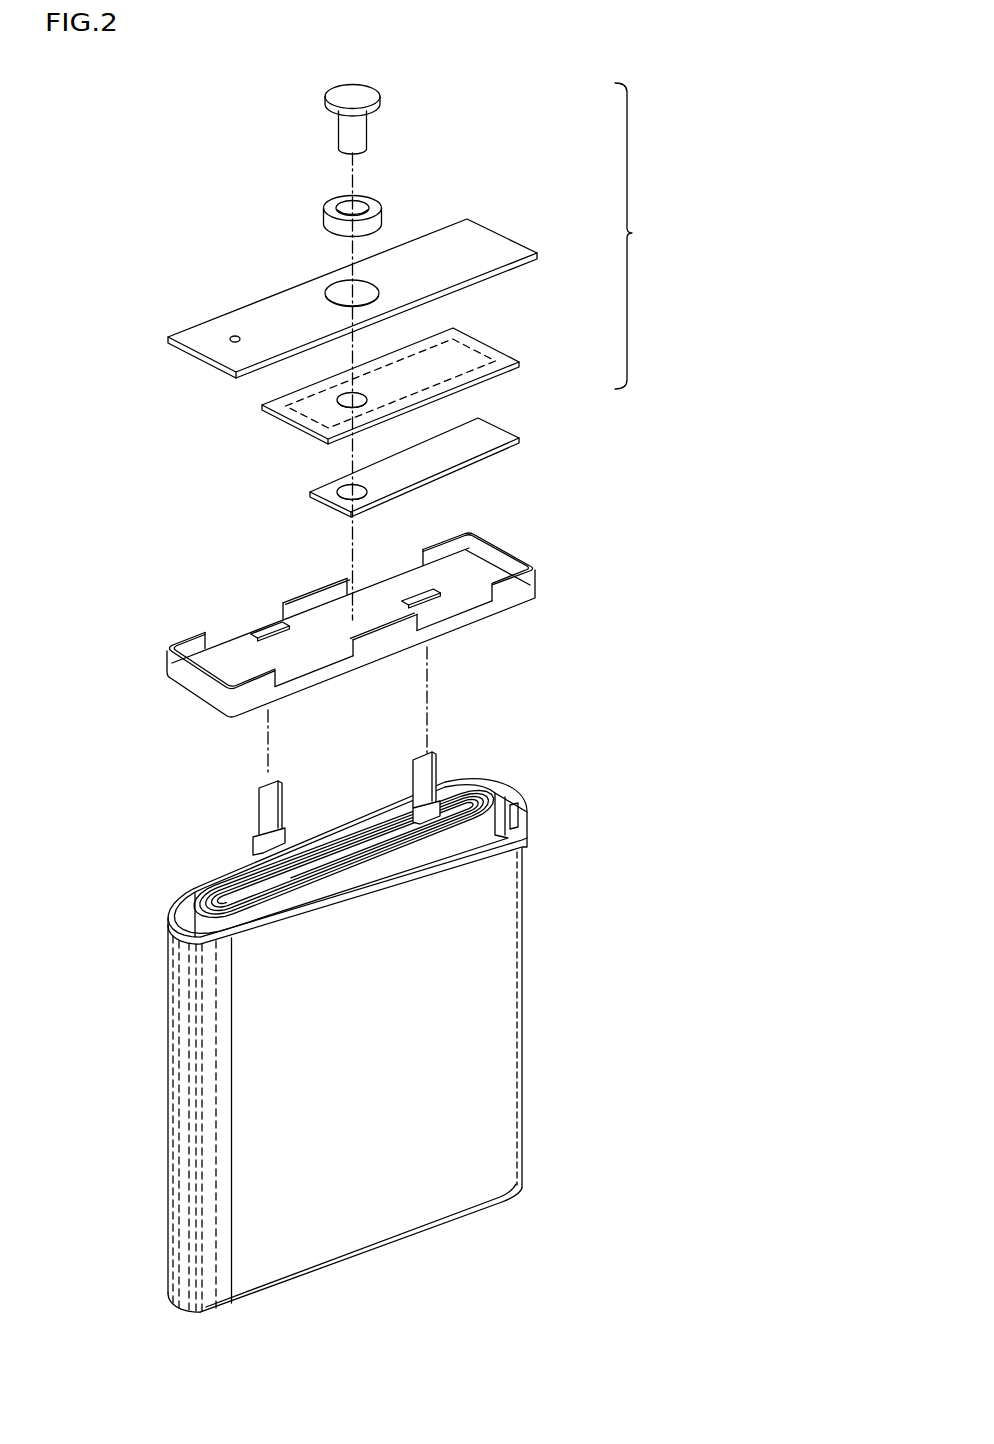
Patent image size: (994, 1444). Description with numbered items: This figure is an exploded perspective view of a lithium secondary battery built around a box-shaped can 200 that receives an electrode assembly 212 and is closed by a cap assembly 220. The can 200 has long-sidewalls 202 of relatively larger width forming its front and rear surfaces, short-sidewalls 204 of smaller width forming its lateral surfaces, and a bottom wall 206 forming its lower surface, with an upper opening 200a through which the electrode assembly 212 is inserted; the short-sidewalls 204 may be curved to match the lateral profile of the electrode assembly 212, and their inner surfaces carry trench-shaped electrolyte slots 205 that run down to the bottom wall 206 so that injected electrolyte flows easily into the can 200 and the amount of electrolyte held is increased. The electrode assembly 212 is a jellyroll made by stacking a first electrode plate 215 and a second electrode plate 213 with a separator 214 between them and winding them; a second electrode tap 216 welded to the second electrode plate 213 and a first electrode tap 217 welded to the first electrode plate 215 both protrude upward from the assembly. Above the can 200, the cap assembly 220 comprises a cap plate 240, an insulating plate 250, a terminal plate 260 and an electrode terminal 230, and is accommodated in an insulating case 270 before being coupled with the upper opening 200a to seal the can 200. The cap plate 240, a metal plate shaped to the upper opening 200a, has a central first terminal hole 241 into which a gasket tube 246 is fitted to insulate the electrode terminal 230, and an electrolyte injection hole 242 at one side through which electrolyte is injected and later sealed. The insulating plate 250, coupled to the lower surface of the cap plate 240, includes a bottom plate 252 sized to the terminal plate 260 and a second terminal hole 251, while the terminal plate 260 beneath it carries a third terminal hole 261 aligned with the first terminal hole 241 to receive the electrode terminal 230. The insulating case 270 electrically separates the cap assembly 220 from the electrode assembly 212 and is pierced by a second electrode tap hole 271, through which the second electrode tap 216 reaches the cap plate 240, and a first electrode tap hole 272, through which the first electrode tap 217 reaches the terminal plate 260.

The can 200 is at (385, 1019).
The upper opening 200a is at (518, 828).
The long-sidewalls 202 is at (377, 1077).
The short-sidewalls 204 is at (198, 1288).
The electrolyte slots 205 is at (166, 921).
The bottom wall 206 is at (378, 1256).
The electrode assembly 212 is at (390, 790).
The second electrode plate 213 is at (541, 767).
The separator 214 is at (480, 795).
The first electrode plate 215 is at (466, 796).
The second electrode tap 216 is at (270, 813).
The first electrode tap 217 is at (427, 775).
The cap assembly 220 is at (648, 236).
The electrode terminal 230 is at (363, 95).
The cap plate 240 is at (373, 291).
The first terminal hole 241 is at (340, 290).
The electrolyte injection hole 242 is at (232, 337).
The gasket tube 246 is at (332, 205).
The insulating plate 250 is at (382, 393).
The second terminal hole 251 is at (342, 403).
The bottom plate 252 is at (270, 412).
The terminal plate 260 is at (422, 470).
The third terminal hole 261 is at (343, 498).
The insulating case 270 is at (295, 613).
The second electrode tap hole 271 is at (263, 628).
The first electrode tap hole 272 is at (418, 590).